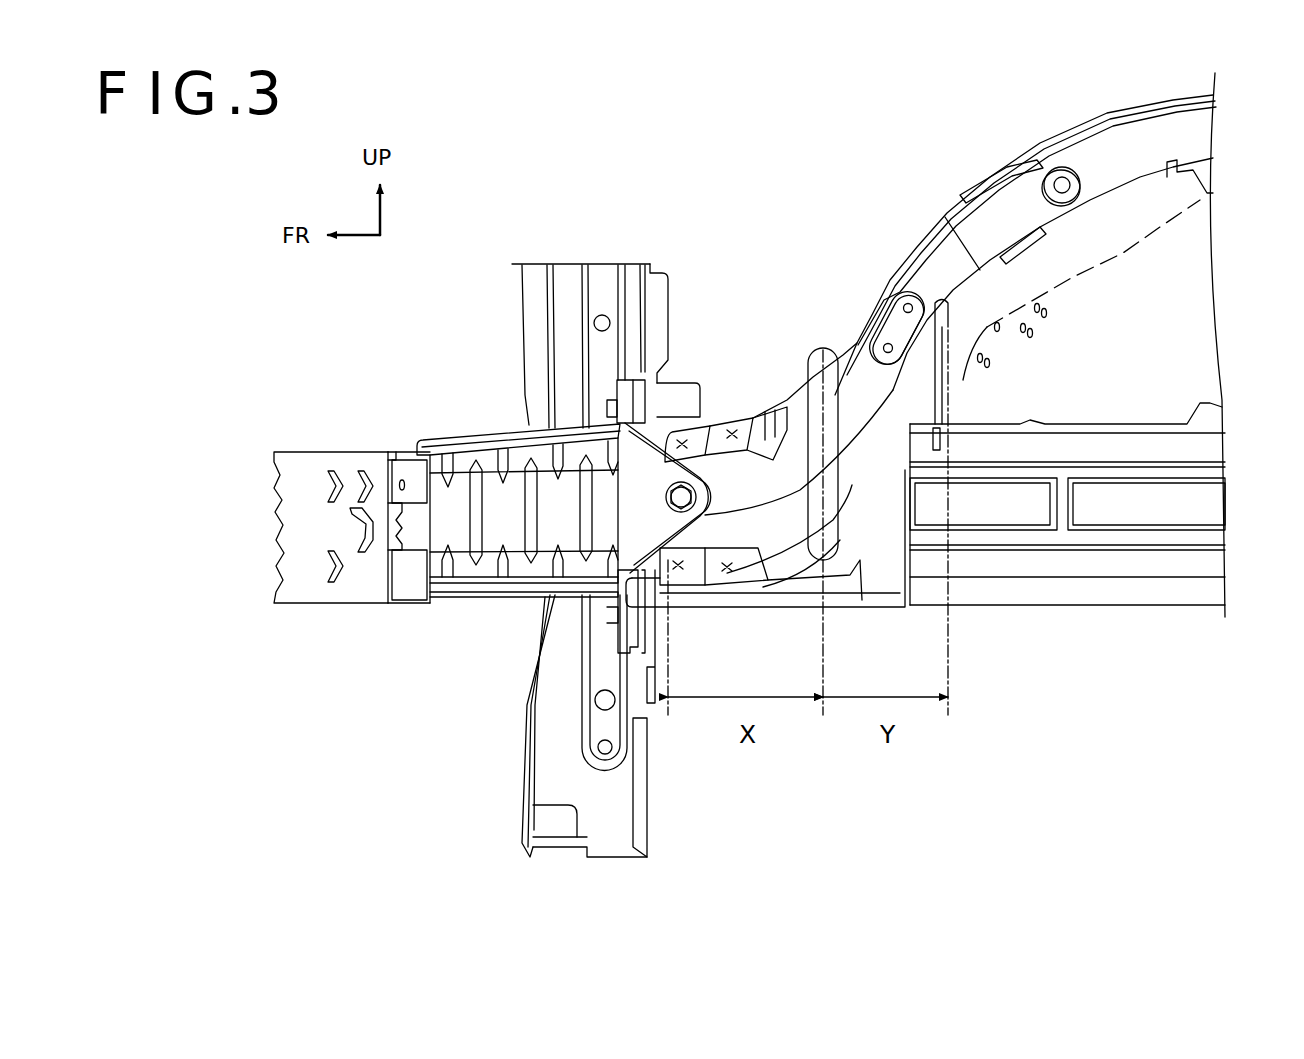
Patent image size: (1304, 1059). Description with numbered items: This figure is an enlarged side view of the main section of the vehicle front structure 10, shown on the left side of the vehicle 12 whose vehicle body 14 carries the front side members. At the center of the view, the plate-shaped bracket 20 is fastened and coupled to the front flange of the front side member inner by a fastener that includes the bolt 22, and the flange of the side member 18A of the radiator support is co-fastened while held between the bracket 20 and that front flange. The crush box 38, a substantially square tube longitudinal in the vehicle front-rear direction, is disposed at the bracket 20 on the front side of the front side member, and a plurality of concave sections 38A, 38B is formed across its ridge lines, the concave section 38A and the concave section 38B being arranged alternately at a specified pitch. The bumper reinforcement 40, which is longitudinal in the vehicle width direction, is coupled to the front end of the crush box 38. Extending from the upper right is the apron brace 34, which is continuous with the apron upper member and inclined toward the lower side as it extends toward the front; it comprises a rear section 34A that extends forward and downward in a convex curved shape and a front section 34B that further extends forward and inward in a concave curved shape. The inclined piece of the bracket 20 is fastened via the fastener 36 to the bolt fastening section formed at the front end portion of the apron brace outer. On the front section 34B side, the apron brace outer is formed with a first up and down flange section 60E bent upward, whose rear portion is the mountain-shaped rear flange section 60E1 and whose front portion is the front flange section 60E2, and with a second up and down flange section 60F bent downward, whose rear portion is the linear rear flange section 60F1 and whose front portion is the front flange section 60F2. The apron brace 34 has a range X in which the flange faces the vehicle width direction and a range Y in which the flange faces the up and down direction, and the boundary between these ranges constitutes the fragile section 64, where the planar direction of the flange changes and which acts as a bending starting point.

The vehicle front structure 10 is at (794, 160).
The vehicle 12 is at (405, 700).
The vehicle body 14 is at (1142, 630).
The side member 18A is at (571, 272).
The bracket 20 is at (656, 443).
The bolt 22 is at (612, 395).
The apron brace 34 is at (880, 268).
The rear section 34A is at (928, 258).
The front section 34B is at (768, 470).
The fastener 36 is at (665, 495).
The crush box 38 is at (447, 606).
The concave section 38A is at (468, 520).
The concave section 38B is at (440, 440).
The bumper reinforcement 40 is at (293, 597).
The first up and down flange section 60E is at (808, 232).
The rear flange section 60E1 is at (800, 387).
The front flange section 60E2 is at (727, 413).
The second up and down flange section 60F is at (813, 660).
The rear flange section 60F1 is at (777, 543).
The front flange section 60F2 is at (712, 543).
The fragile section 64 is at (824, 340).